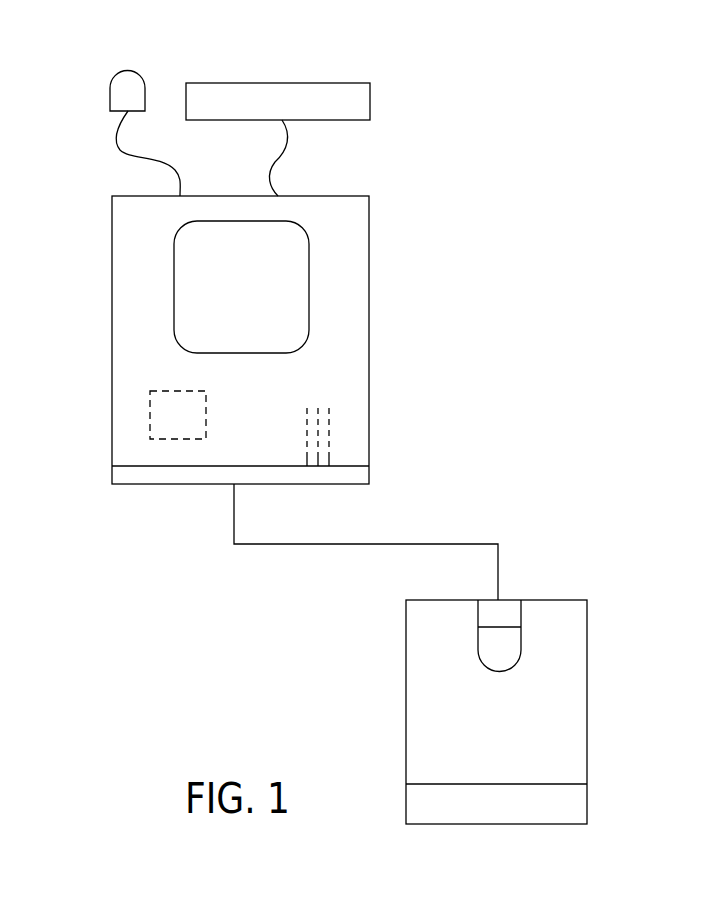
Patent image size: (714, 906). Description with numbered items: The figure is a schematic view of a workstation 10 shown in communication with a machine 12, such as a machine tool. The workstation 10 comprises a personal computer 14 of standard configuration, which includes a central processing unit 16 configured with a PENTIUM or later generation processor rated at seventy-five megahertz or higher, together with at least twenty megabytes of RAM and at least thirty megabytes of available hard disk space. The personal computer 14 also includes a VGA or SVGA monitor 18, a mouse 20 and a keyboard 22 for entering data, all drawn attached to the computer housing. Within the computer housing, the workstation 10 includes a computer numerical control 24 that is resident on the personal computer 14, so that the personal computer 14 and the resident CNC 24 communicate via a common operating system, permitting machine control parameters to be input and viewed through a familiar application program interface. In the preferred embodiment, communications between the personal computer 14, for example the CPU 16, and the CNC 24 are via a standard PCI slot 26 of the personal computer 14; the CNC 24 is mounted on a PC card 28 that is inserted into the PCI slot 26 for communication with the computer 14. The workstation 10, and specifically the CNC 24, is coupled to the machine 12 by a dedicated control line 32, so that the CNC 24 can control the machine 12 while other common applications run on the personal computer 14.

The workstation 10 is at (409, 187).
The machine 12 is at (590, 637).
The personal computer 14 is at (101, 297).
The central processing unit 16 is at (150, 418).
The monitor 18 is at (307, 269).
The mouse 20 is at (135, 71).
The keyboard 22 is at (370, 107).
The computer numerical control 24 is at (342, 418).
The PCI slot 26 is at (307, 457).
The PC card 28 is at (320, 412).
The dedicated control line 32 is at (413, 543).